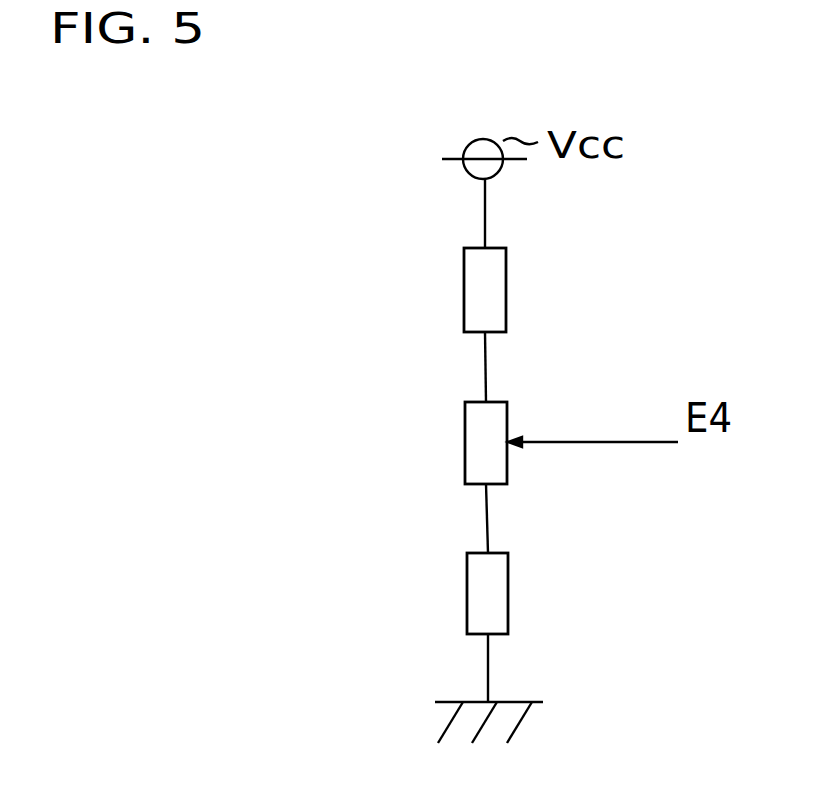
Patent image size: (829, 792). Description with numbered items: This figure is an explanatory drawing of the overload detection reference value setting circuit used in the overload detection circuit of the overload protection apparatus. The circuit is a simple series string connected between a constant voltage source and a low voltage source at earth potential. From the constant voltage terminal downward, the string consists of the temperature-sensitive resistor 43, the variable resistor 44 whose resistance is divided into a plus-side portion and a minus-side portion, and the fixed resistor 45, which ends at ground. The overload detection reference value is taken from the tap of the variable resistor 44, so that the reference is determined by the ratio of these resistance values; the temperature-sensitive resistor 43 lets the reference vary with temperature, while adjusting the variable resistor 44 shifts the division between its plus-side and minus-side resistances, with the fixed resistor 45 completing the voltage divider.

The temperature-sensitive resistor 43 is at (467, 290).
The variable resistor 44 is at (465, 442).
The fixed resistor 45 is at (468, 592).